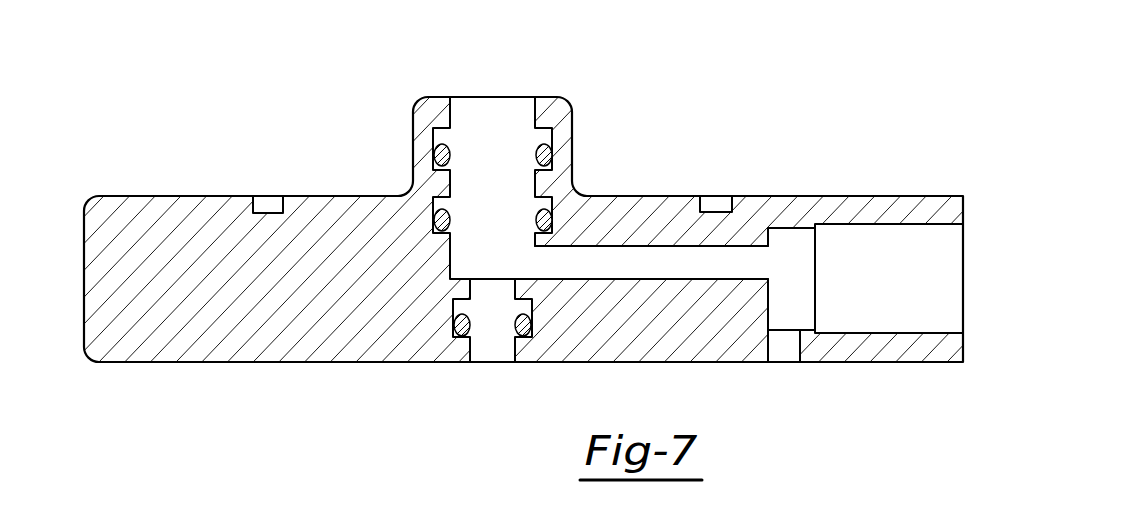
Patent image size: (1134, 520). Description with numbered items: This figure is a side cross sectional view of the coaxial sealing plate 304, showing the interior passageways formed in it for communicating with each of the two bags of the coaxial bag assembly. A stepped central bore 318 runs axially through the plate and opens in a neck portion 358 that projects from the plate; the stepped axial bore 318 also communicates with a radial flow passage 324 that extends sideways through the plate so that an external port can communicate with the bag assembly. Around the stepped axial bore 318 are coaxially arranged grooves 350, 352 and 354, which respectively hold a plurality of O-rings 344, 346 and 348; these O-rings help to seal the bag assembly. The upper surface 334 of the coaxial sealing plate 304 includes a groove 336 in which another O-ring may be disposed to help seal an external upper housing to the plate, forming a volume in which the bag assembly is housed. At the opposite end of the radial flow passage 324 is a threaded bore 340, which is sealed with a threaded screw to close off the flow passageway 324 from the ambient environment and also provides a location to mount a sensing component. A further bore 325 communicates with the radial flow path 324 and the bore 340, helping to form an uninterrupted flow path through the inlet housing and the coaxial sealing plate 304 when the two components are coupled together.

The coaxial sealing plate 304 is at (806, 77).
The stepped central bore 318 is at (493, 118).
The radial flow passage 324 is at (667, 263).
The bore 325 is at (787, 347).
The upper surface 334 is at (790, 196).
The groove 336 is at (268, 203).
The threaded bore 340 is at (886, 232).
The O-ring 344 is at (435, 153).
The O-ring 346 is at (438, 220).
The O-ring 348 is at (462, 328).
The groove 350 is at (550, 152).
The groove 352 is at (550, 215).
The groove 354 is at (523, 330).
The neck portion 358 is at (433, 108).